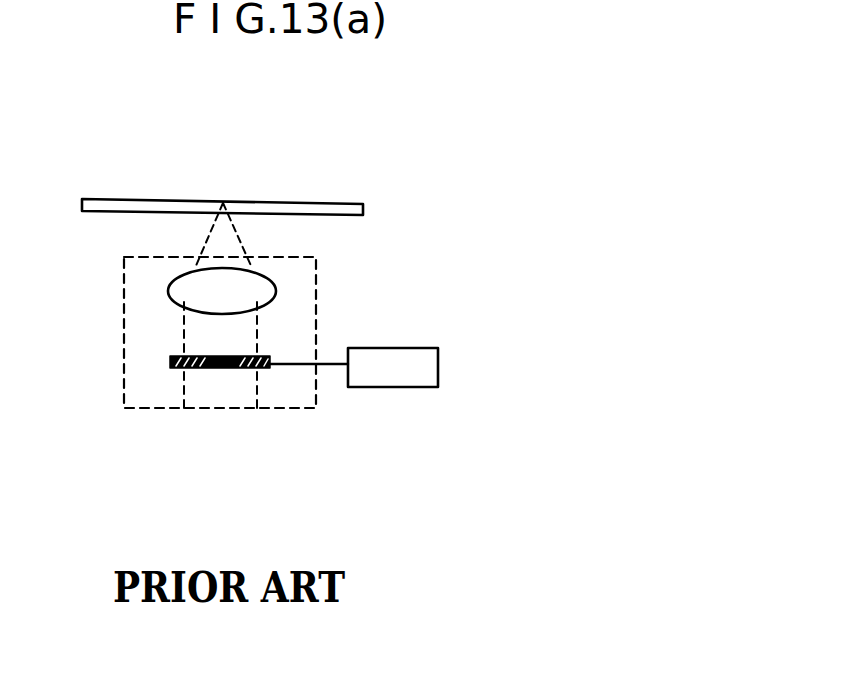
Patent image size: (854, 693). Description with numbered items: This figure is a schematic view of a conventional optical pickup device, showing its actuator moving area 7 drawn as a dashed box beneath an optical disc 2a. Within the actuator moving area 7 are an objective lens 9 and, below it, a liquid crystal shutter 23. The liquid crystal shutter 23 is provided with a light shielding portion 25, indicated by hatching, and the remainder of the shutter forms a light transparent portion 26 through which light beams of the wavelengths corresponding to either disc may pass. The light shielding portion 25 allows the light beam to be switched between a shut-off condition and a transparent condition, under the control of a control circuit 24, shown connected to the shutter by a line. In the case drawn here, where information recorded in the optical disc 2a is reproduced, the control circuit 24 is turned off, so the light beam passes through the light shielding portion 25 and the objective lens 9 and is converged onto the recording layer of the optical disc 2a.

The optical disc 2a is at (310, 208).
The actuator moving area 7 is at (145, 338).
The objective lens 9 is at (170, 290).
The light transparent portion 26 is at (228, 356).
The liquid crystal shutter 23 is at (228, 368).
The light shielding portion 25 is at (283, 364).
The control circuit 24 is at (425, 368).